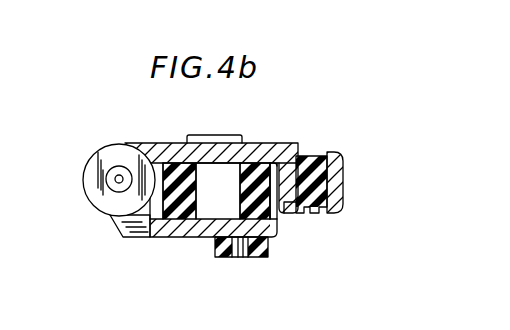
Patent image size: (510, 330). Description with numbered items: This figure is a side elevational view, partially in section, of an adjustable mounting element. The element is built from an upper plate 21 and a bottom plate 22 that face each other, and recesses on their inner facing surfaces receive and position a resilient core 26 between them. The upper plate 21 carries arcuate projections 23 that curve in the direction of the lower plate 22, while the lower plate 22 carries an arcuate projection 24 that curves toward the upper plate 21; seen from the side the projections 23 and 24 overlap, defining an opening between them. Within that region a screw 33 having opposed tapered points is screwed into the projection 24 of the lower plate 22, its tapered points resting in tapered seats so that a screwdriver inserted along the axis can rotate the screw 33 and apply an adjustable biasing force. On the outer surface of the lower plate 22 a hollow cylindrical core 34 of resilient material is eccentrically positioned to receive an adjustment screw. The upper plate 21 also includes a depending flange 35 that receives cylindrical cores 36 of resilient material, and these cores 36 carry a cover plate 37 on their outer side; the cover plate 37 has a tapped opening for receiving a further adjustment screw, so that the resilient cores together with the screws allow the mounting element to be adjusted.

The upper plate 21 is at (165, 153).
The bottom plate 22 is at (168, 230).
The arcuate projections 23 is at (92, 160).
The arcuate projection 24 is at (122, 233).
The resilient core 26 is at (183, 210).
The screw 33 is at (118, 166).
The hollow cylindrical core 34 is at (260, 258).
The depending flange 35 is at (284, 190).
The cylindrical cores 36 is at (311, 175).
The cover plate 37 is at (331, 157).